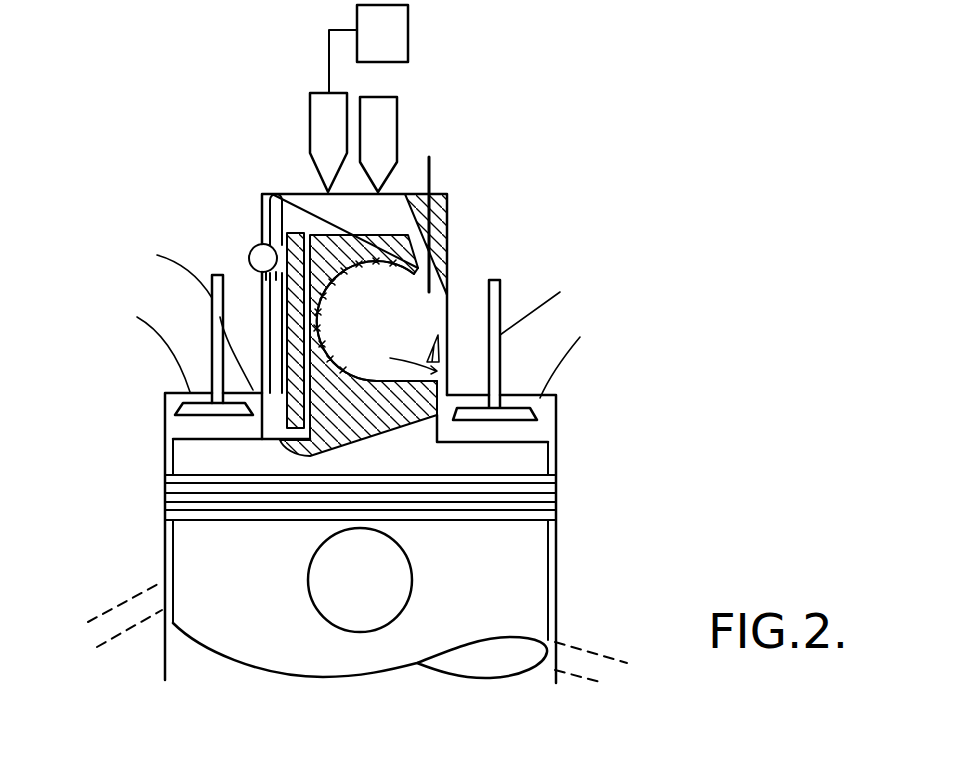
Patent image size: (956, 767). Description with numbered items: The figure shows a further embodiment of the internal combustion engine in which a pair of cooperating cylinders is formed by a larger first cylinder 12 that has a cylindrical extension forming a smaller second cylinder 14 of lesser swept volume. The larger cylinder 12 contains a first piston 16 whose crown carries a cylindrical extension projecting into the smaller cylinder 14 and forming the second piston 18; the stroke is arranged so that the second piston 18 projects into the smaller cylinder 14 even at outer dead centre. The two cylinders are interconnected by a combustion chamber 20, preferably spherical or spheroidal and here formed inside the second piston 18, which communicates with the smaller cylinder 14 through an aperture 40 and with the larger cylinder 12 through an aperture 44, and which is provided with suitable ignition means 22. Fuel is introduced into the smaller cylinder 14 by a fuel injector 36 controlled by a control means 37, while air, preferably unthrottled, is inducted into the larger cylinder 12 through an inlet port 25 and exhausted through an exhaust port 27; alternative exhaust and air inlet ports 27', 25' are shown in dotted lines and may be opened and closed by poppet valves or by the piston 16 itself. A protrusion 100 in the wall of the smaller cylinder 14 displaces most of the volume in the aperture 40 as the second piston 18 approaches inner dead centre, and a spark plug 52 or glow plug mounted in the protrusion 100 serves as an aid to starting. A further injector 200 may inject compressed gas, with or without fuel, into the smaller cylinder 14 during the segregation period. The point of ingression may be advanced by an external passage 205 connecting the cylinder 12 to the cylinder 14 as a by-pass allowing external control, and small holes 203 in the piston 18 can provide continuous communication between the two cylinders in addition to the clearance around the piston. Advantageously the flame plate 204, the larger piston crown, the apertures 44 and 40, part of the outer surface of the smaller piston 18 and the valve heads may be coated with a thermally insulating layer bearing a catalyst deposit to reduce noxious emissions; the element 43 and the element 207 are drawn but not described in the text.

The first cylinder 12 is at (550, 418).
The second cylinder 14 is at (327, 195).
The first piston 16 is at (598, 555).
The second piston 18 is at (295, 193).
The combustion chamber 20 is at (365, 328).
The ignition means 22 is at (327, 252).
The inlet port 25 is at (526, 332).
The alternative air inlet port 25' is at (597, 643).
The exhaust port 27 is at (175, 329).
The alternative exhaust port 27' is at (123, 602).
The fuel injector 36 is at (322, 115).
The control means 37 is at (393, 45).
The aperture 40 is at (415, 247).
The throat lip 43 is at (447, 393).
The aperture 44 is at (400, 357).
The spark plug 52 is at (432, 167).
The protrusion 100 is at (462, 197).
The injector 200 is at (375, 135).
The small holes 203 is at (263, 205).
The flame plate 204 is at (182, 397).
The external passage 205 is at (253, 252).
The rod connector 207 is at (263, 277).